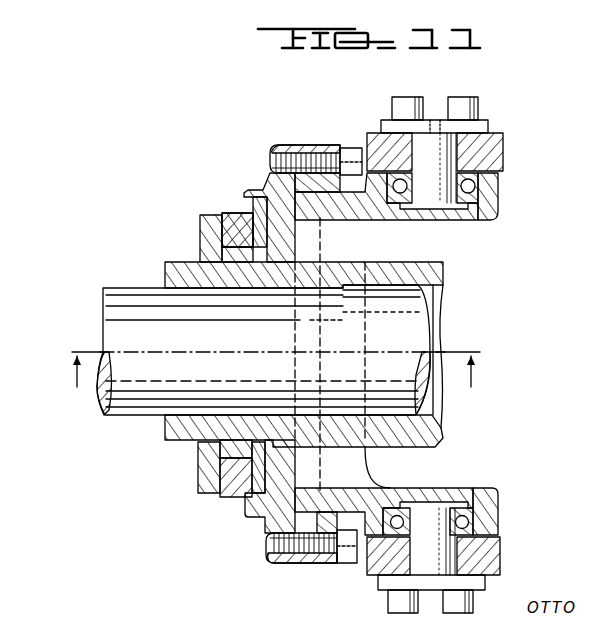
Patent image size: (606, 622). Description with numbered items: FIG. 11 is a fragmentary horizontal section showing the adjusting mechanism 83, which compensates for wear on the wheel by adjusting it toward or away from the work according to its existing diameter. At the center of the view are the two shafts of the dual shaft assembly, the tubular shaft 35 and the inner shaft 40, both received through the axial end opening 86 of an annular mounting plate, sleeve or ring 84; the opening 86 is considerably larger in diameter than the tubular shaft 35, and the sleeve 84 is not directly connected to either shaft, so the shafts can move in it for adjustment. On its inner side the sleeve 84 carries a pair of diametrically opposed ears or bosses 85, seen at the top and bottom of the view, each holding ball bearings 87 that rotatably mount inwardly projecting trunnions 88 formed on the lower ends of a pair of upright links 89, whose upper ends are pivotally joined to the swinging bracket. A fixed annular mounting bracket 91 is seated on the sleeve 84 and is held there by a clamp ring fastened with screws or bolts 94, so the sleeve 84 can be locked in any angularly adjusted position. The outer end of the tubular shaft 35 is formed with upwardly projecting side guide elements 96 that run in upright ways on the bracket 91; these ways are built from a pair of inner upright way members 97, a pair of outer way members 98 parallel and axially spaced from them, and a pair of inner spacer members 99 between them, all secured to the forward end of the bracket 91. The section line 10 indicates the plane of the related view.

The section line 10- 10 is at (272, 374).
The tubular shaft 35 is at (418, 447).
The shaft 40 is at (410, 393).
The adjusting mechanism 83 is at (310, 138).
The annular mounting plate, sleeve or ring 84 is at (365, 262).
The ears or bosses 85 is at (483, 215).
The axial end opening 86 is at (352, 463).
The ball bearings 87 is at (470, 520).
The trunnions 88 is at (445, 555).
The upright links 89 is at (497, 140).
The mounting bracket 91 is at (270, 184).
The screws or bolts 94 is at (338, 150).
The side guide elements 96 is at (225, 255).
The inner upright way members 97 is at (258, 225).
The outer way members 98 is at (210, 232).
The inner spacer members 99 is at (222, 214).